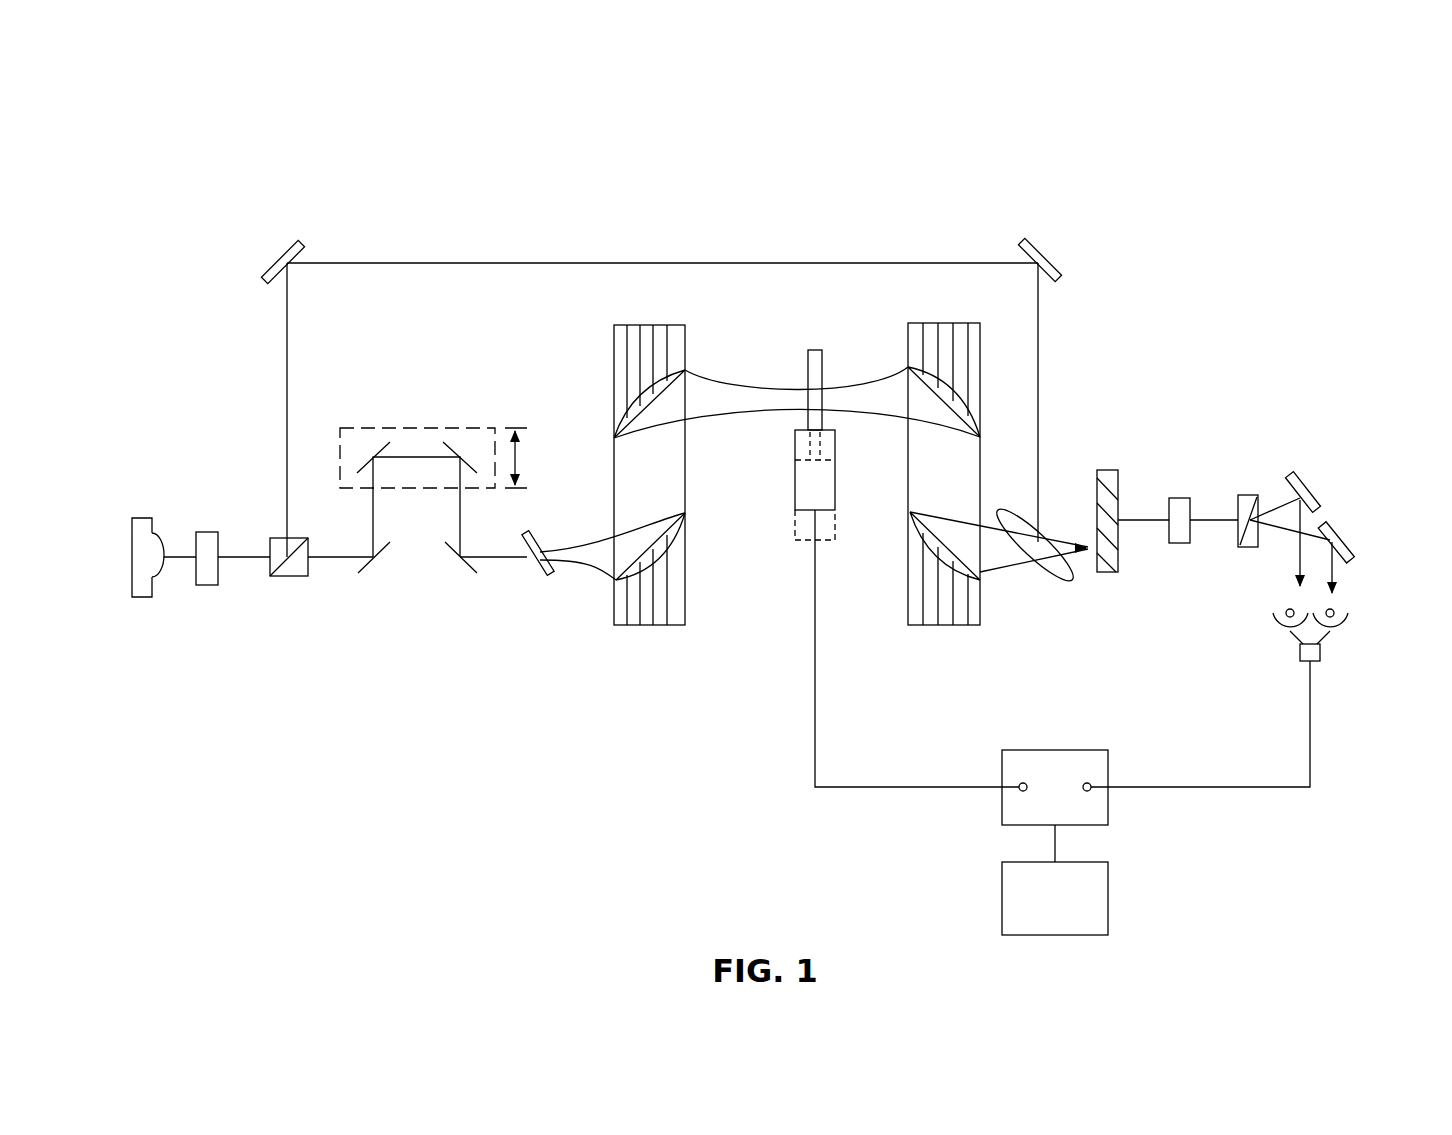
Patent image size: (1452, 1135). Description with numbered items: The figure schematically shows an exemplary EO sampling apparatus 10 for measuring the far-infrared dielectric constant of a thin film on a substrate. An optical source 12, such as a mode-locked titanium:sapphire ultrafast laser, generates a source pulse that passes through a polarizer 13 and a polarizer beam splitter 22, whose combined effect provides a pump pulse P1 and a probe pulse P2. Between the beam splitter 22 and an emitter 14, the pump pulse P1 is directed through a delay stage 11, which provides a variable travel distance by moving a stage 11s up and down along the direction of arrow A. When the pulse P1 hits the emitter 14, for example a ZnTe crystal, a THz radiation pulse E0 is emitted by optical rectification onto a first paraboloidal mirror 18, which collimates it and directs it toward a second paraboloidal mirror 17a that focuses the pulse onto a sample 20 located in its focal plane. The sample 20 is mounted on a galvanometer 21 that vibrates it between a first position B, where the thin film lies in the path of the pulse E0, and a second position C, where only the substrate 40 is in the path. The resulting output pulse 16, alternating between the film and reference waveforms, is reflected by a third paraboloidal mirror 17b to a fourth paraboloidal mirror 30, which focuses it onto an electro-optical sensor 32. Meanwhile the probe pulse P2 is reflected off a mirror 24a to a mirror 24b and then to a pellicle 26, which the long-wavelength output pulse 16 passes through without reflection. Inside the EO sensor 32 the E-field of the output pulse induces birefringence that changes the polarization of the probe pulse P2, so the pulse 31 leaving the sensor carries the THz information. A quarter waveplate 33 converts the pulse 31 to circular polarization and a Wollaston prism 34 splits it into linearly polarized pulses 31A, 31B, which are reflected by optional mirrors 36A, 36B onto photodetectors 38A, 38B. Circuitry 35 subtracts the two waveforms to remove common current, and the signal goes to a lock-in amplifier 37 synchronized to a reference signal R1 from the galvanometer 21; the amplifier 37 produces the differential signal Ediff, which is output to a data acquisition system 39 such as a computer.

The EO sampling apparatus 10 is at (674, 231).
The delay stage 11 is at (420, 560).
The stage 11s is at (414, 428).
The optical source 12 is at (140, 518).
The polarizer 13 is at (207, 532).
The emitter 14 is at (545, 575).
The output pulse 16 is at (863, 395).
The second paraboloidal mirror 17a is at (622, 352).
The third paraboloidal mirror 17b is at (975, 352).
The first paraboloidal mirror 18 is at (652, 612).
The sample 20 is at (840, 346).
The galvanometer 21 is at (815, 486).
The polarizer beam splitter 22 is at (286, 577).
The mirror 24a is at (282, 252).
The mirror 24b is at (1042, 252).
The pellicle 26 is at (1057, 572).
The fourth paraboloidal mirror 30 is at (947, 610).
The pulse 31 is at (1143, 522).
The linearly polarized pulse 31A is at (1294, 557).
The linearly polarized pulse 31B is at (1338, 569).
The electro-optical sensor 32 is at (1108, 470).
The quarter waveplate 33 is at (1180, 498).
The Wollaston prism 34 is at (1247, 495).
The circuitry 35 is at (1298, 657).
The mirror 36A is at (1302, 476).
The mirror 36B is at (1338, 522).
The lock-in amplifier 37 is at (1043, 804).
The photodetector 38A is at (1273, 627).
The photodetector 38B is at (1340, 628).
The data acquisition system 39 is at (1043, 910).
The substrate 40 is at (812, 350).
The arrow A is at (522, 455).
The first position B is at (776, 482).
The second position C is at (776, 532).
The pump pulse P1 is at (340, 558).
The probe pulse P2 is at (286, 410).
The radiation pulse E0 is at (592, 553).
The reference signal R1 is at (918, 787).
The differential signal Ediff is at (1057, 842).